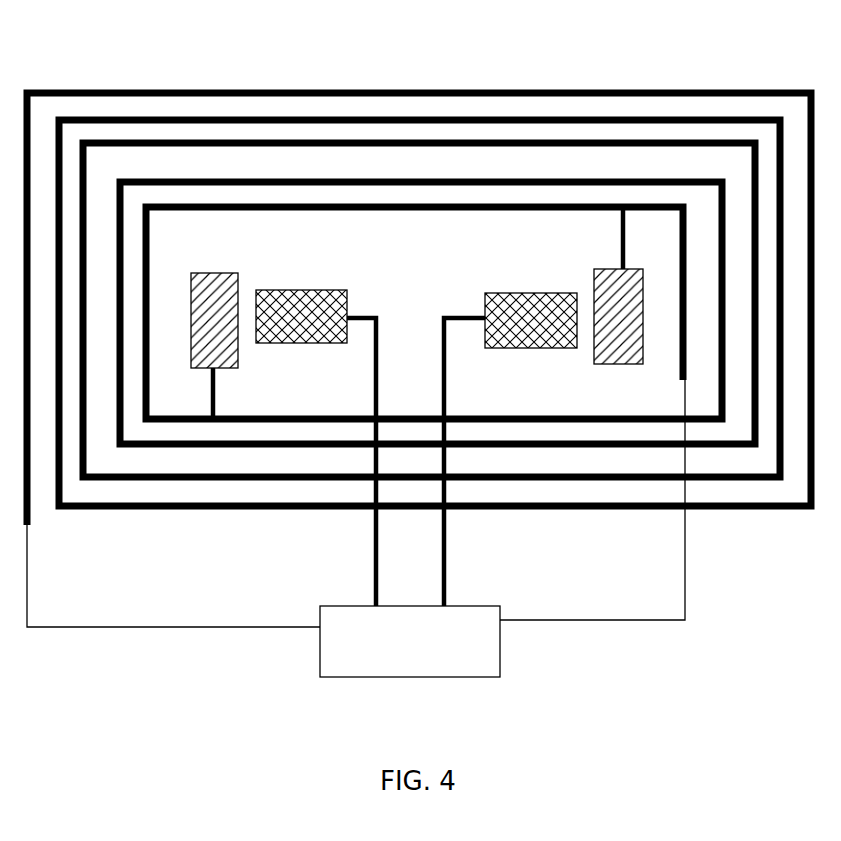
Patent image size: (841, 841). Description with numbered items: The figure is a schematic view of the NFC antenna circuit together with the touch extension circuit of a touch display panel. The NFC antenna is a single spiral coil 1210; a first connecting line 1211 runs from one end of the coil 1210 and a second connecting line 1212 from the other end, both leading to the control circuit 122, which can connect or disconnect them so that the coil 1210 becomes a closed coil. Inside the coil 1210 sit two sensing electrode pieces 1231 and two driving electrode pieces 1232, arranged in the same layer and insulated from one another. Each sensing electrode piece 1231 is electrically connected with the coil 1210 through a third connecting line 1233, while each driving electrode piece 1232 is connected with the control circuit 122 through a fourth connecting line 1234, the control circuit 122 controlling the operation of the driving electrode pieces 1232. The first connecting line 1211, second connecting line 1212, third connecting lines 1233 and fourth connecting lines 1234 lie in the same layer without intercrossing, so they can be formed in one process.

The coil 1210 is at (75, 90).
The sensing electrode piece 1231 is at (213, 273).
The driving electrode piece 1232 is at (308, 290).
The third connecting line 1233 is at (213, 378).
The fourth connecting line 1234 is at (376, 545).
The second connecting line 1212 is at (73, 627).
The first connecting line 1211 is at (613, 620).
The control circuit 122 is at (403, 677).